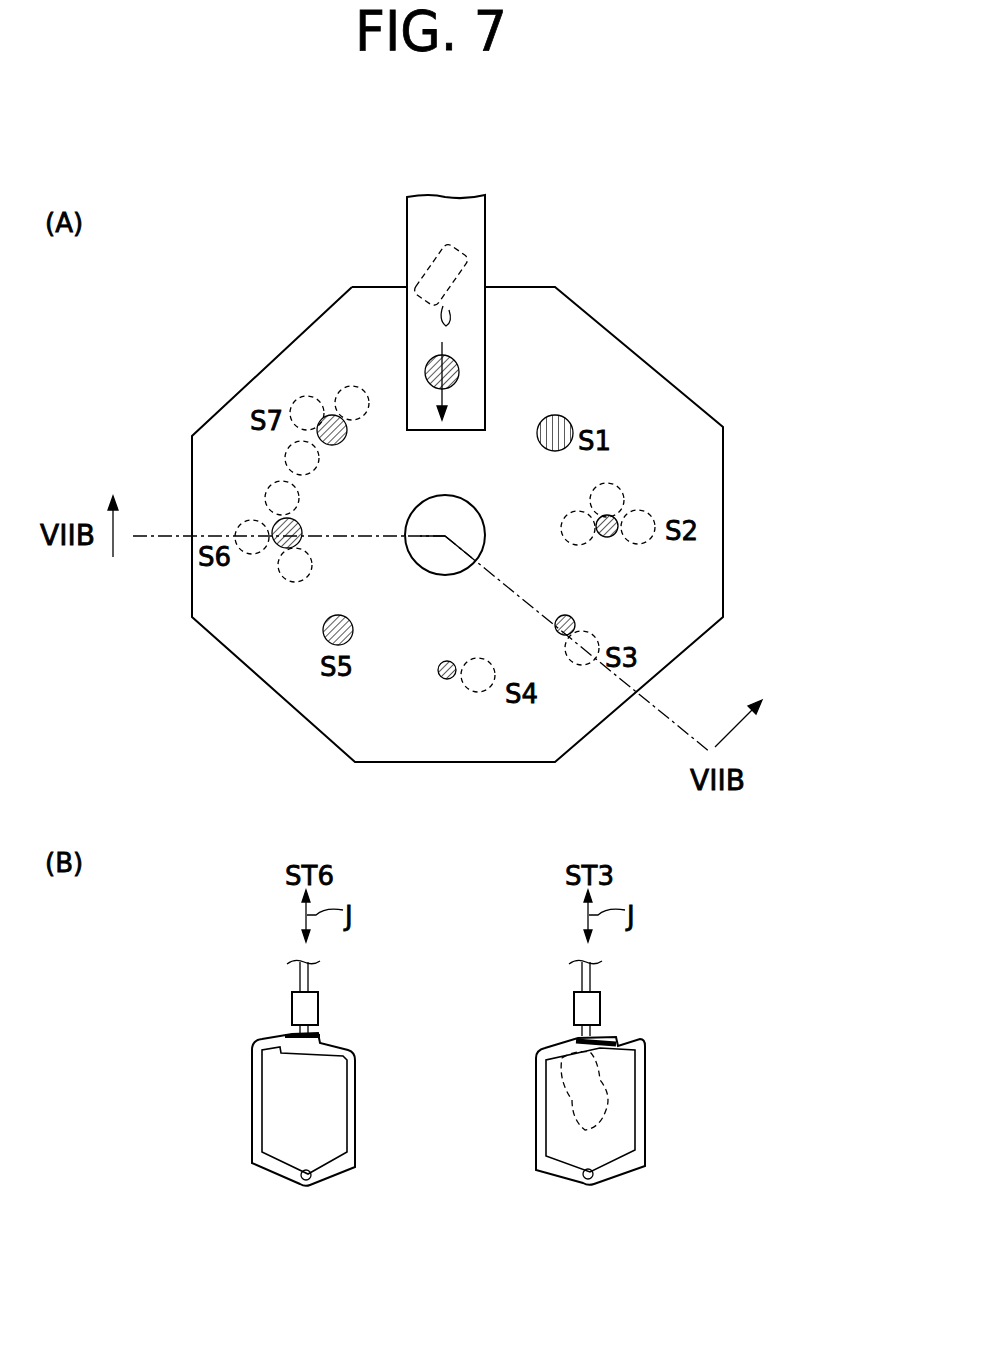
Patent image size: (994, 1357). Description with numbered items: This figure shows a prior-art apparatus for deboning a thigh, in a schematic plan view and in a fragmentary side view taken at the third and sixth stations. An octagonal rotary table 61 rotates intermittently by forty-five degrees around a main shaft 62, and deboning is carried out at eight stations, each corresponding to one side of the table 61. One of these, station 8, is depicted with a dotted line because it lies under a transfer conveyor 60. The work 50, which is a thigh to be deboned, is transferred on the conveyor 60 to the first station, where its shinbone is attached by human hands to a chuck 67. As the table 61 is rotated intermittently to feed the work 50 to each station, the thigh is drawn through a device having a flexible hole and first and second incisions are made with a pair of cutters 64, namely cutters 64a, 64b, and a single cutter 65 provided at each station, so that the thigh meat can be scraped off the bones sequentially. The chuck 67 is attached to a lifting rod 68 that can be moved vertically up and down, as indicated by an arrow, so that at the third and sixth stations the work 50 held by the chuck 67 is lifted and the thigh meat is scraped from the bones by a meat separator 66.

The station 8 is at (460, 368).
The work 50 is at (458, 248).
The conveyor 60 is at (485, 273).
The rotary table 61 is at (583, 328).
The main shaft 62 is at (447, 496).
The pair of cutters 64 is at (576, 622).
The cutter 64a is at (312, 560).
The cutter 64b is at (354, 386).
The single cutter 65 is at (310, 397).
The meat separator 66 is at (284, 1186).
The chuck 67 is at (318, 1006).
The lifting rod 68 is at (309, 975).